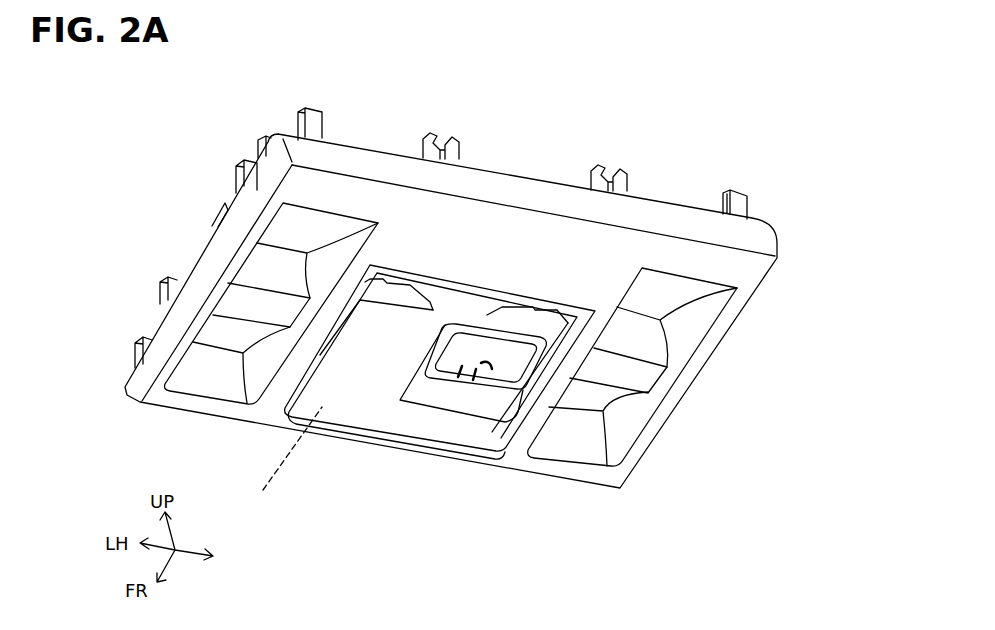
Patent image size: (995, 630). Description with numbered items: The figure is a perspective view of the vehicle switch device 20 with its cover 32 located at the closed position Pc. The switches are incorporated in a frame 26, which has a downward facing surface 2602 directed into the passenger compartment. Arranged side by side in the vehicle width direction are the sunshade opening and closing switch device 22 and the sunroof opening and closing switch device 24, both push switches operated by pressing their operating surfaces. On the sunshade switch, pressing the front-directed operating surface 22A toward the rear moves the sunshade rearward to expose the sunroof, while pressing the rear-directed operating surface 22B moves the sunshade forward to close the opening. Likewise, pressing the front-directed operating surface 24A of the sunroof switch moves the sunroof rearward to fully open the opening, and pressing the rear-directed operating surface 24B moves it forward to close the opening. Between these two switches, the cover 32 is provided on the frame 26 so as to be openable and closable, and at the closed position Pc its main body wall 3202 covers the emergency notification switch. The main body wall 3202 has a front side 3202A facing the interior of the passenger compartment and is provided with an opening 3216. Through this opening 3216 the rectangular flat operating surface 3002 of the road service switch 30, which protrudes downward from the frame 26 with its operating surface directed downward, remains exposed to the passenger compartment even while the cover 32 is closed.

The vehicle switch device 20 is at (431, 473).
The sunshade opening and closing switch device 22 is at (231, 299).
The operating surface 22A is at (222, 327).
The operating surface 22B is at (260, 263).
The sunroof opening and closing switch device 24 is at (662, 372).
The operating surface 24A is at (600, 398).
The operating surface 24B is at (640, 330).
The frame 26 is at (555, 195).
The surface 2602 is at (484, 302).
The cover 32 is at (452, 327).
The main body wall 3202 is at (409, 425).
The front side 3202A is at (361, 398).
The opening 3216 is at (436, 384).
The road service switch 30 is at (539, 422).
The operating surface 3002 is at (482, 355).
The closed position Pc is at (281, 459).